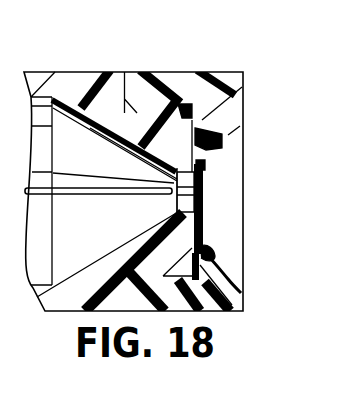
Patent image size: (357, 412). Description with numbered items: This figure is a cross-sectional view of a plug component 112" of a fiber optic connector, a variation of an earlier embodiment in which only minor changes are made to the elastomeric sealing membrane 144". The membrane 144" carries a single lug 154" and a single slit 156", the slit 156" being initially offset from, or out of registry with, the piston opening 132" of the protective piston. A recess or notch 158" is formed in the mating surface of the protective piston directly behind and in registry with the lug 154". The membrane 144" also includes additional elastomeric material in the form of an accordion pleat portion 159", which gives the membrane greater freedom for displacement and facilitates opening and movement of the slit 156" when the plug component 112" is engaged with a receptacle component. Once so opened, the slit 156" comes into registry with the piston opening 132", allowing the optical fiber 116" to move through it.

The plug component 112 is at (67, 72).
The optical fiber 116 is at (93, 188).
The piston opening 132 is at (180, 200).
The elastomeric sealing membrane 144 is at (233, 83).
The lug 154 is at (219, 145).
The slit 156 is at (205, 216).
The recess or notch 158 is at (193, 112).
The accordion pleat portion 159 is at (211, 256).